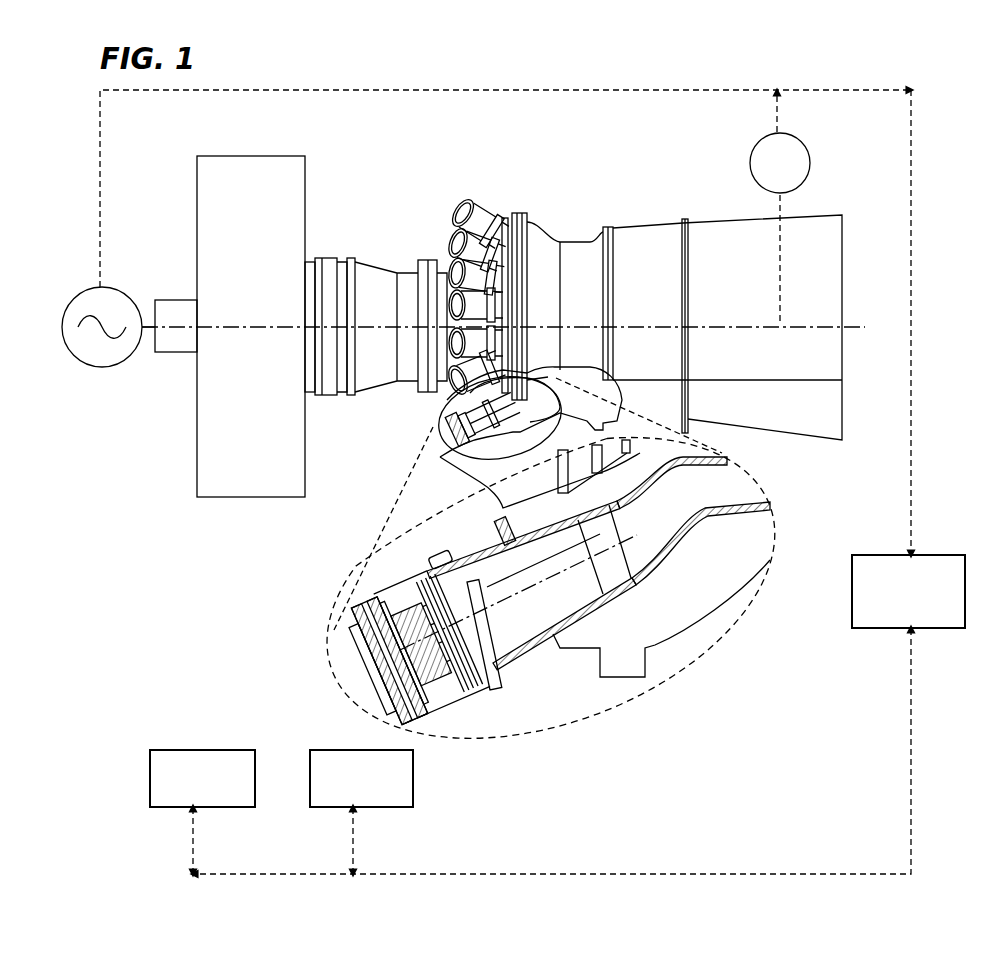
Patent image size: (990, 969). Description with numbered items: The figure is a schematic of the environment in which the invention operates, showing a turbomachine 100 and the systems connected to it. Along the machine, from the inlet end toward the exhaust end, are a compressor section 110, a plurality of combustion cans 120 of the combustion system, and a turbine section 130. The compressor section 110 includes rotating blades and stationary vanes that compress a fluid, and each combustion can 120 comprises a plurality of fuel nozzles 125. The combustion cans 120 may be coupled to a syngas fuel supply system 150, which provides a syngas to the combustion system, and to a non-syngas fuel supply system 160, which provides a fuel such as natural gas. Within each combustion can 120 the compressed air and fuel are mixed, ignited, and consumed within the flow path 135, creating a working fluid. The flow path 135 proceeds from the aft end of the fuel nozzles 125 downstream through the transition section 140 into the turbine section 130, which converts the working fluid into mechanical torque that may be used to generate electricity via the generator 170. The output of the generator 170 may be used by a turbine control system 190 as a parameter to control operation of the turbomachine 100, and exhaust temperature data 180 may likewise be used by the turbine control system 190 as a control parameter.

The turbomachine 100 is at (234, 147).
The compressor section 110 is at (396, 265).
The combustion cans 120 is at (447, 243).
The fuel nozzles 125 is at (407, 585).
The turbine section 130 is at (625, 228).
The flow path 135 is at (598, 558).
The transition section 140 is at (672, 524).
The syngas fuel supply system 150 is at (352, 650).
The non-syngas fuel supply system 160 is at (375, 690).
The generator 170 is at (103, 287).
The exhaust temperature data 180 is at (799, 177).
The turbine control system 190 is at (922, 603).